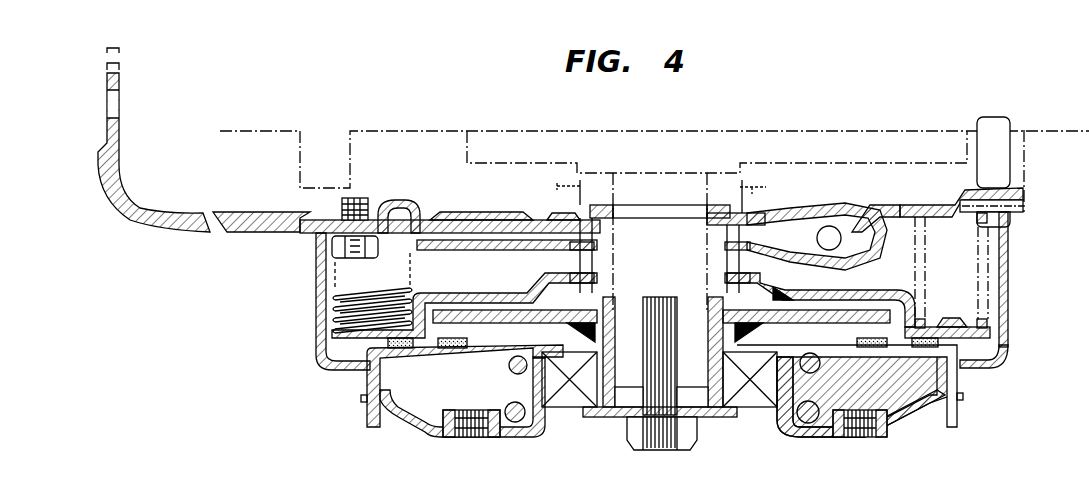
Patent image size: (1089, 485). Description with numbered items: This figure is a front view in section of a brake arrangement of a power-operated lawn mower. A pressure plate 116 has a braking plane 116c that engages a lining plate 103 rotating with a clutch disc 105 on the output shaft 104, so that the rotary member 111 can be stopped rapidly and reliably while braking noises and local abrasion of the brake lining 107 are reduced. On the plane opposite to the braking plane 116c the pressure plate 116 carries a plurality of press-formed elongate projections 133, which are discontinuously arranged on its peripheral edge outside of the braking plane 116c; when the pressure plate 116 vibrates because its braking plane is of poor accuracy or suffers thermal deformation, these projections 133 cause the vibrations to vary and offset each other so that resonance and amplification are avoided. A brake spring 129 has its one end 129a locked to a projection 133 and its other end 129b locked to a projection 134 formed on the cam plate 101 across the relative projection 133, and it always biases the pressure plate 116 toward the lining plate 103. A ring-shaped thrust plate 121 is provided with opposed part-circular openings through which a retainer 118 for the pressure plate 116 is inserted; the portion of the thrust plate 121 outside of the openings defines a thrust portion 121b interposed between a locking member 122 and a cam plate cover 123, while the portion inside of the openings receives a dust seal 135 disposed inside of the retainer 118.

The cam plate 101 is at (920, 210).
The lining plate 103 is at (447, 357).
The output shaft 104 is at (662, 187).
The clutch disc 105 is at (800, 317).
The brake lining 107 is at (400, 350).
The rotary member 111 is at (500, 432).
The pressure plate 116 is at (840, 290).
The braking plane 116c is at (920, 340).
The retainer 118 is at (590, 263).
The thrust plate 121 is at (547, 217).
The thrust portion 121b is at (547, 220).
The locking member 122 is at (747, 212).
The cam plate cover 123 is at (455, 212).
The brake spring 129 is at (923, 282).
The one end of brake spring 129a is at (987, 323).
The other end of brake spring 129b is at (900, 212).
The projection 133 is at (950, 318).
The projection 134 is at (953, 218).
The dust seal 135 is at (598, 205).